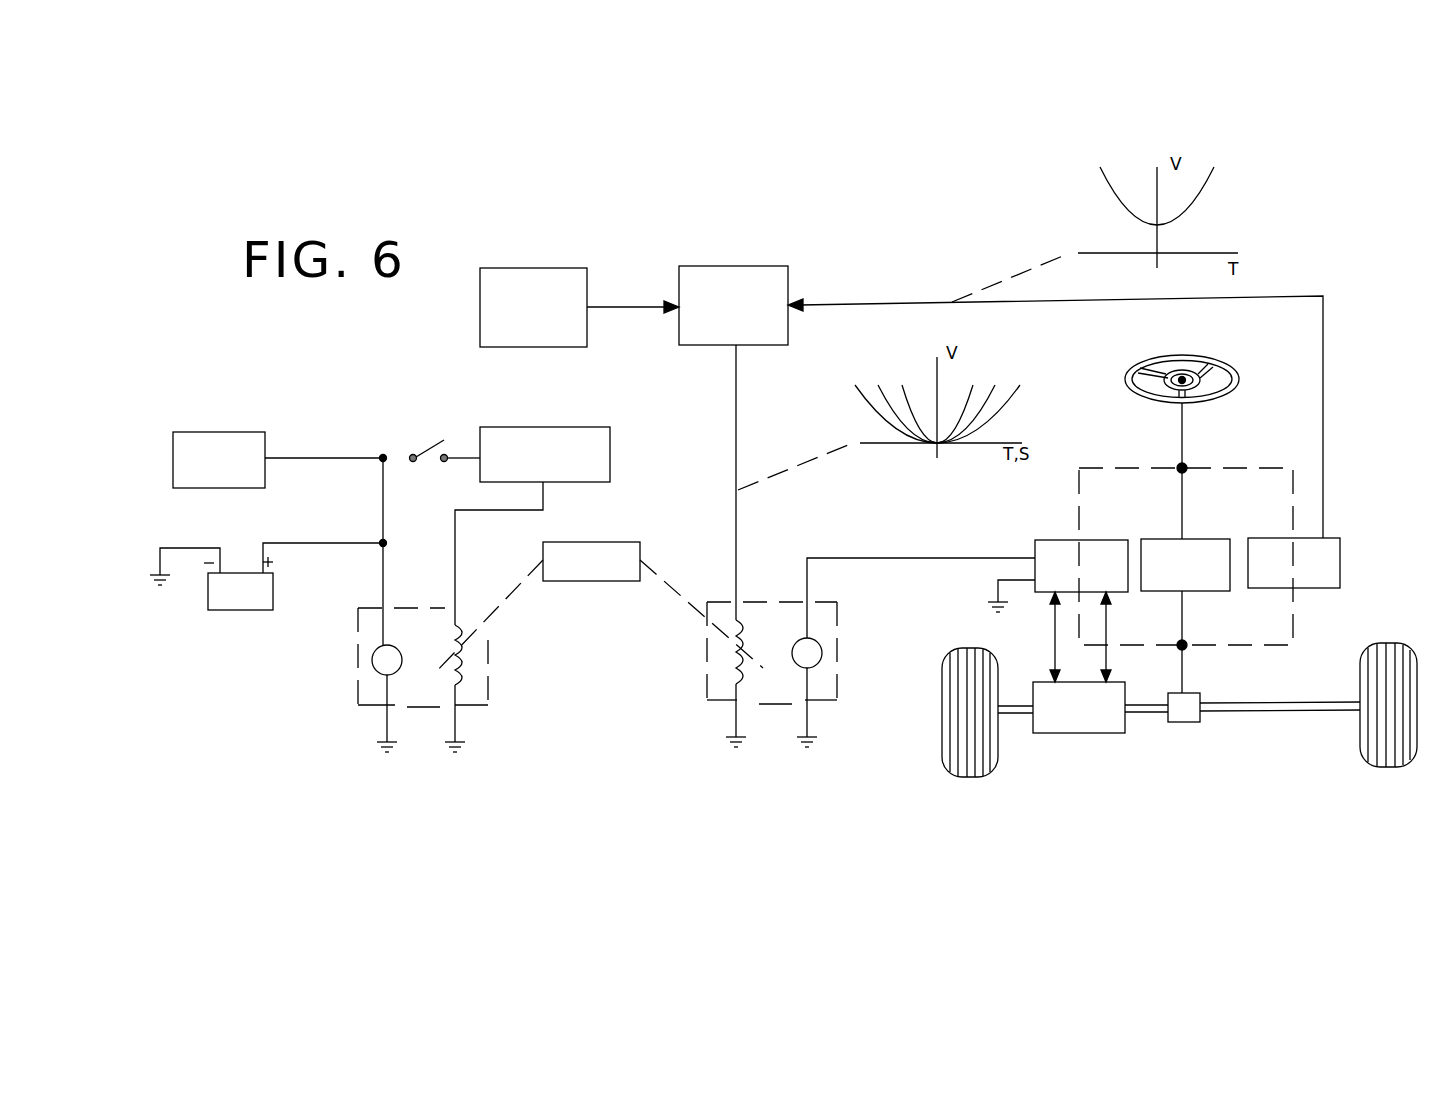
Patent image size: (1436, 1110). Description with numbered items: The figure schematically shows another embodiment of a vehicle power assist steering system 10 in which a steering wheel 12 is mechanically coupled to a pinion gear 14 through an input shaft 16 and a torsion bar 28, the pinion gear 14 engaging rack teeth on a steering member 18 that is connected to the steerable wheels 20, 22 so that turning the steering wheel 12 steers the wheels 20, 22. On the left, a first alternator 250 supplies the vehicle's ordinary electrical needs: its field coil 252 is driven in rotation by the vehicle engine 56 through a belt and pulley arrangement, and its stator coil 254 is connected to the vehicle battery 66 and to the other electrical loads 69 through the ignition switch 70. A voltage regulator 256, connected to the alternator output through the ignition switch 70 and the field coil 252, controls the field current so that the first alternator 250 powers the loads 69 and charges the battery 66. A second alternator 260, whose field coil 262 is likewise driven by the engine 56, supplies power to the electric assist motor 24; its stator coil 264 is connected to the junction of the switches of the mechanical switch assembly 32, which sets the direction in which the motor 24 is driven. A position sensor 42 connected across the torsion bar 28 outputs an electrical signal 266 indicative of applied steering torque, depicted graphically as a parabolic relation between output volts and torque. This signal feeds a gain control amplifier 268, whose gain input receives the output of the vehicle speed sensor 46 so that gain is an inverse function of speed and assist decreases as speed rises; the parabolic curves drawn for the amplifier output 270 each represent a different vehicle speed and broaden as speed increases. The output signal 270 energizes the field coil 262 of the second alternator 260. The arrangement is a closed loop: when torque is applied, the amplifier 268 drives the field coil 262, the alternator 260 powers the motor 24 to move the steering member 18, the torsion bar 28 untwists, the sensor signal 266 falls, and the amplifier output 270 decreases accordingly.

The vehicle speed sensor 46 is at (556, 268).
The gain control amplifier 268 is at (752, 266).
The electrical signal 266 is at (952, 302).
The output signal 270 is at (737, 490).
The vehicle engine 56 is at (618, 542).
The electrical loads 69 is at (226, 432).
The ignition switch 70 is at (428, 444).
The voltage regulator 256 is at (530, 427).
The vehicle battery 66 is at (246, 608).
The stator coil 254 is at (386, 660).
The field coil 252 is at (462, 665).
The first alternator 250 is at (358, 697).
The field coil 262 is at (741, 655).
The stator coil 264 is at (822, 653).
The second alternator 260 is at (707, 692).
The power assist steering system 10 is at (1356, 383).
The steering wheel 12 is at (1238, 368).
The input shaft 16 is at (1183, 441).
The mechanical switch assembly 32 is at (1067, 539).
The torsion bar 28 is at (1198, 539).
The position sensor 42 is at (1333, 547).
The electric assist motor 24 is at (1060, 734).
The pinion gear 14 is at (1190, 717).
The steering member 18 is at (1249, 712).
The steerable wheel 20 is at (963, 725).
The steerable wheel 22 is at (1393, 663).